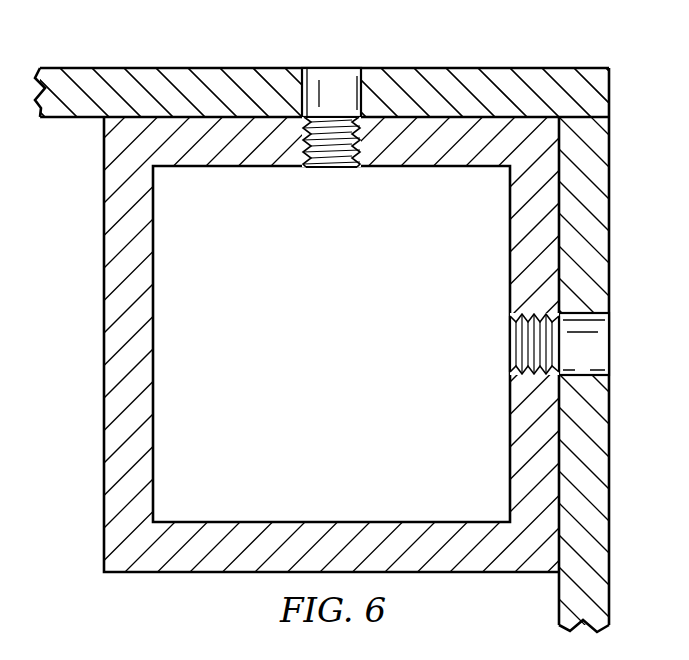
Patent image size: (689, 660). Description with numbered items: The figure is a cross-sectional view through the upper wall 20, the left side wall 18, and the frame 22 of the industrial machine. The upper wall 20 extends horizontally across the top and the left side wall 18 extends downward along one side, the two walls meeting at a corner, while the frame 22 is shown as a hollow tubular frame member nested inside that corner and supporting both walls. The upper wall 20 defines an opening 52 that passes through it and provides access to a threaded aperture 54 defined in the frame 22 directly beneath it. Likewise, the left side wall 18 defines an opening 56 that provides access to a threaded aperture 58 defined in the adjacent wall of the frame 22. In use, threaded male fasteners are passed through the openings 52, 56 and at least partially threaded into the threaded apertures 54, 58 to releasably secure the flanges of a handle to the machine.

The left side wall 18 is at (610, 503).
The upper wall 20 is at (177, 67).
The frame 22 is at (104, 382).
The opening 52 is at (360, 85).
The threaded aperture 54 is at (335, 158).
The opening 56 is at (582, 372).
The threaded aperture 58 is at (528, 363).